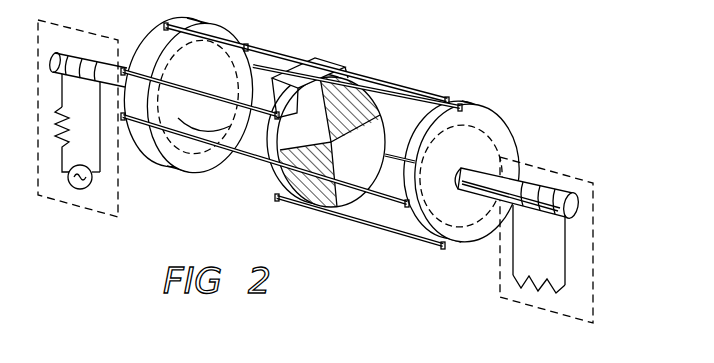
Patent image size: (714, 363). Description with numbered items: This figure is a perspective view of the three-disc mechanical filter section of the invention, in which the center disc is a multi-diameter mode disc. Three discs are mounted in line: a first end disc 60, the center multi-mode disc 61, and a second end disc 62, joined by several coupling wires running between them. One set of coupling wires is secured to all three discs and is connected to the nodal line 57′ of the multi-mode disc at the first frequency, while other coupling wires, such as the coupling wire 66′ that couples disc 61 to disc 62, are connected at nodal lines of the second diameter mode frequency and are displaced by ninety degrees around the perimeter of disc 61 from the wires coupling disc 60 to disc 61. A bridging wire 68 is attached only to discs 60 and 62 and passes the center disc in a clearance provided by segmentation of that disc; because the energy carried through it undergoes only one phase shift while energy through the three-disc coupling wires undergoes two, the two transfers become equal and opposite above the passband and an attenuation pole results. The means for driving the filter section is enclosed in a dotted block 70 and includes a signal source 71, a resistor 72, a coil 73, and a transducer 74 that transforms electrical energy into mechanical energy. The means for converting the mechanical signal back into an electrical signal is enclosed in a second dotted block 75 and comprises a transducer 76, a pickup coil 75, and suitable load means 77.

The nodal line 57′ is at (322, 140).
The disc 60 is at (160, 34).
The disc 61 is at (338, 62).
The disc 62 is at (507, 120).
The coupling wire 66′ is at (354, 220).
The bridging wire 68 is at (278, 56).
The dotted block 70 is at (118, 170).
The signal source 71 is at (88, 188).
The resistor 72 is at (74, 139).
The coil 73 is at (64, 48).
The transducer 74 is at (96, 91).
The pickup coil 75 is at (520, 207).
The transducer 76 is at (556, 218).
The load means 77 is at (550, 295).